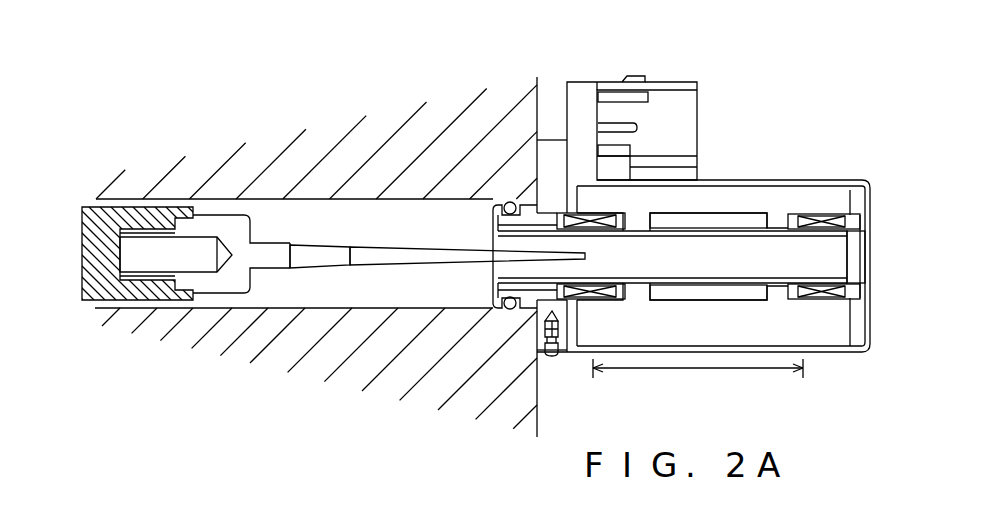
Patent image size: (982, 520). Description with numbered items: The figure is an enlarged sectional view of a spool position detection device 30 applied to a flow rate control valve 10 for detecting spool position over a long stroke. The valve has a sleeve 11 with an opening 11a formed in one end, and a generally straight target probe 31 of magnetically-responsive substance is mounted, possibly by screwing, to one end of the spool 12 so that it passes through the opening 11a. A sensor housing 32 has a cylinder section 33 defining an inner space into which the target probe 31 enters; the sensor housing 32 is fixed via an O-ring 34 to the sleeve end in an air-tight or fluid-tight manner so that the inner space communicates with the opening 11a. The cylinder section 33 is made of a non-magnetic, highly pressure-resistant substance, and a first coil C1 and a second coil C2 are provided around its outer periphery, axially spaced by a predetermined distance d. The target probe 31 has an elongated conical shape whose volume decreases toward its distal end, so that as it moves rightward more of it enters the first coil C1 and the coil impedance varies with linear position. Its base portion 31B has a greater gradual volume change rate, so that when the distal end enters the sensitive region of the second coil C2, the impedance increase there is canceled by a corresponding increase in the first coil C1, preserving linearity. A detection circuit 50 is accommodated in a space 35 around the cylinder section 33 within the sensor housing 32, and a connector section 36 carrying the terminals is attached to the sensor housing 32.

The flow rate control valve 10 is at (292, 106).
The sleeve 11 is at (455, 108).
The opening 11a is at (472, 299).
The spool 12 is at (93, 285).
The spool position detection device 30 is at (813, 125).
The target probe 31 is at (418, 253).
The base portion 31B is at (316, 255).
The sensor housing 32 is at (840, 182).
The cylinder section 33 is at (785, 229).
The O-ring 34 is at (513, 202).
The space 35 is at (752, 197).
The connector section 36 is at (674, 83).
The detection circuit 50 is at (724, 217).
The first coil C1 is at (590, 298).
The second coil C2 is at (820, 298).
The predetermined distance d is at (698, 375).